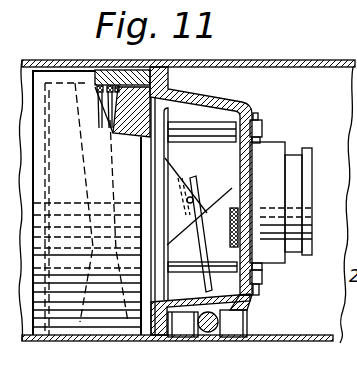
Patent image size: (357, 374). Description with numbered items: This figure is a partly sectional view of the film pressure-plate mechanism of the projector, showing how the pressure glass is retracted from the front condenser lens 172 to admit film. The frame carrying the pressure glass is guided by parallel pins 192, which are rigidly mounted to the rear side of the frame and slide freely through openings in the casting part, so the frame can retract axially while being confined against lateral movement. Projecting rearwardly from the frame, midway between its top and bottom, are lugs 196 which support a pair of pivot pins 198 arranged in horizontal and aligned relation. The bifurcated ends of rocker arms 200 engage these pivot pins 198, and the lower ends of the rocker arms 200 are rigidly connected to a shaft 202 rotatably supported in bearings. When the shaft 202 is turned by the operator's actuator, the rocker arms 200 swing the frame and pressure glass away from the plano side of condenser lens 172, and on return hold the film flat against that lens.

The front condenser lens 172 is at (166, 89).
The parallel pins 192 is at (210, 127).
The lugs 196 is at (174, 172).
The pivot pins 198 is at (217, 193).
The rocker arms 200 is at (200, 232).
The shaft 202 is at (218, 322).